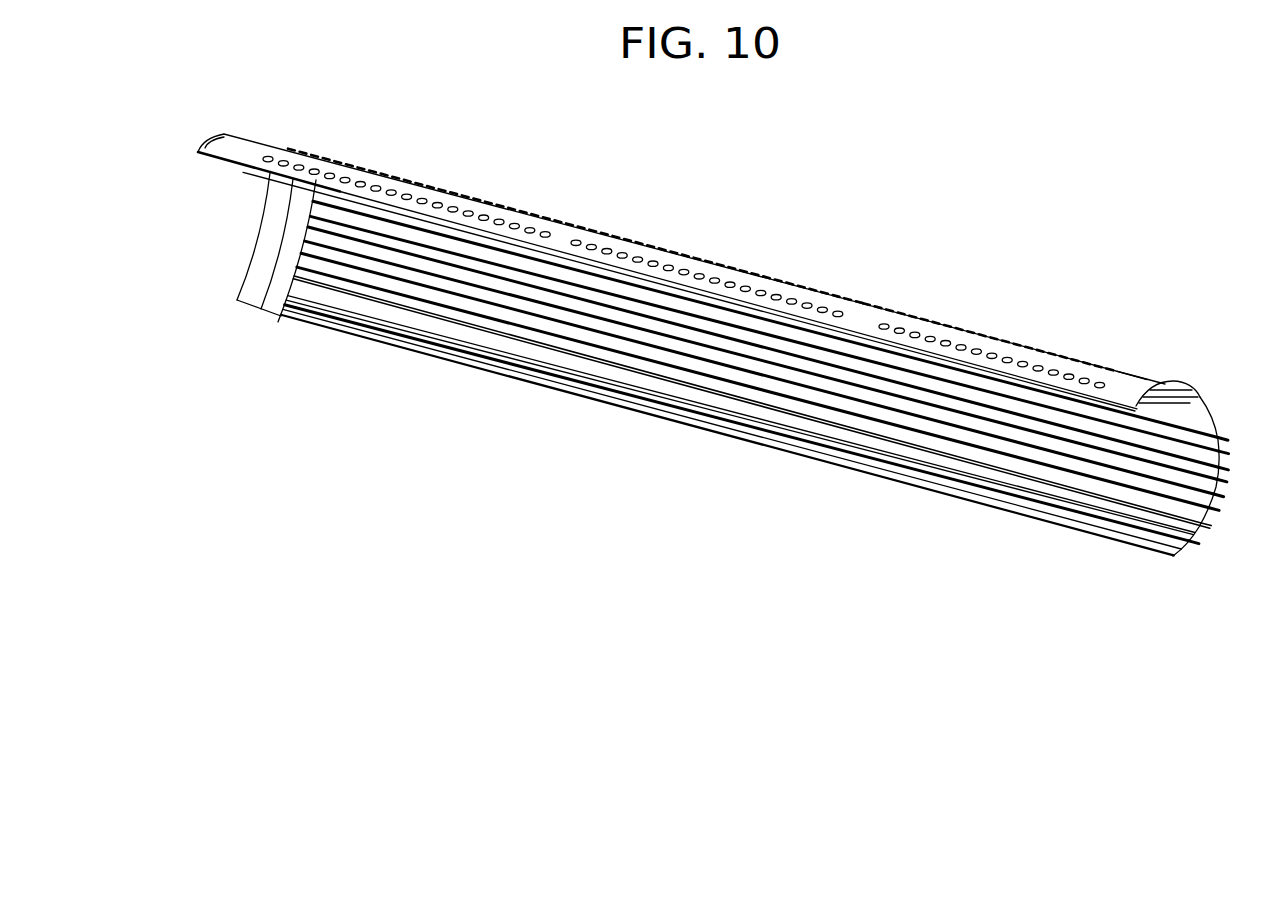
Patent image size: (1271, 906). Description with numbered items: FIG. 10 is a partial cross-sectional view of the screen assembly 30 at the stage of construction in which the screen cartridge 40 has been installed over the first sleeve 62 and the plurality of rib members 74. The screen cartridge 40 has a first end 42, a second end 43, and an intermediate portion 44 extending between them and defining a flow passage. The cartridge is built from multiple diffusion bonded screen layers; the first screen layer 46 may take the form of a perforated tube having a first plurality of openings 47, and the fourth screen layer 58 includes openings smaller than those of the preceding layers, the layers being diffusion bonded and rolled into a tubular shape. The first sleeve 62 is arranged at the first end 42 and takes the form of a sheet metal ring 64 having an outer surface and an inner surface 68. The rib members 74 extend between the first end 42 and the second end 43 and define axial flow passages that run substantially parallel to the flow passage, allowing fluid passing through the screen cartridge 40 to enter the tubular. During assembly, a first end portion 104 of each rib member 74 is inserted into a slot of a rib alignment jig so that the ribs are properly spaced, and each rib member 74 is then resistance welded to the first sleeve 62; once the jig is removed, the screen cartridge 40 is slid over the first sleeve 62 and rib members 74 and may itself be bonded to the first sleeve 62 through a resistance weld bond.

The screen assembly 30 is at (675, 198).
The screen cartridge 40 is at (1017, 322).
The first end 42 is at (238, 136).
The second end 43 is at (1147, 382).
The intermediate portion 44 is at (582, 231).
The first screen layer 46 is at (888, 292).
The first plurality of openings 47 is at (846, 311).
The fourth screen layer 58 is at (903, 453).
The first sleeve 62 is at (250, 252).
The sheet metal ring 64 is at (285, 216).
The inner surface 68 is at (280, 284).
The rib member 74 is at (311, 302).
The first end portion 104 is at (305, 182).